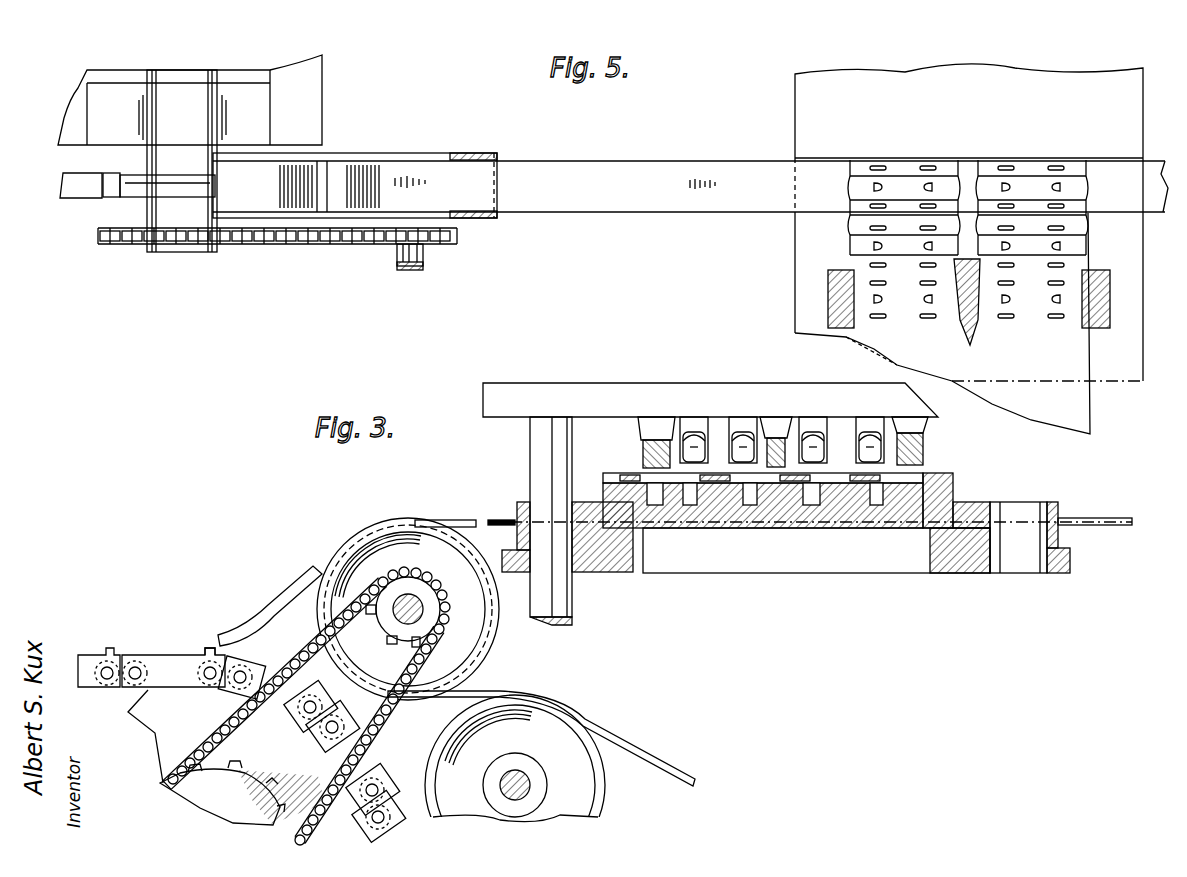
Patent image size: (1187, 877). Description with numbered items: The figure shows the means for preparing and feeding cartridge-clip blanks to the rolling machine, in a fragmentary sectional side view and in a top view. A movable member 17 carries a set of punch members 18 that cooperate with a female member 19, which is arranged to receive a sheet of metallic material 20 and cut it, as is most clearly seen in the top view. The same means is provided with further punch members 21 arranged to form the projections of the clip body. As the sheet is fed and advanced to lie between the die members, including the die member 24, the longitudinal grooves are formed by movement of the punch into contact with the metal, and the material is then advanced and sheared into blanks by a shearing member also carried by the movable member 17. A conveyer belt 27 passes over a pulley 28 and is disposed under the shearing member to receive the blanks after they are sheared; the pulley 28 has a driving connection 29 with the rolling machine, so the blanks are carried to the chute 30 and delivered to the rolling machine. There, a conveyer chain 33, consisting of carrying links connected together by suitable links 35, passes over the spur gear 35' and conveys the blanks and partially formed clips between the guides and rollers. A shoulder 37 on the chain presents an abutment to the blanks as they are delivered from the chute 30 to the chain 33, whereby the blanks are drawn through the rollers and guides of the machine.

In FIG. 3, the movable member 17 is at (492, 383).
In FIG. 3, the punch members 18 is at (641, 438).
In FIG. 5, the female member 19 is at (826, 298).
In FIG. 3, the female member 19 is at (732, 528).
In FIG. 5, the sheet of metallic material 20 is at (1090, 418).
In FIG. 3, the punch members 21 is at (735, 430).
In FIG. 5, the die member 24 is at (803, 221).
In FIG. 5, the conveyer belt 27 is at (737, 162).
In FIG. 3, the conveyer belt 27 is at (473, 520).
In FIG. 5, the pulley 28 is at (497, 219).
In FIG. 3, the pulley 28 is at (488, 655).
In FIG. 5, the driving connection 29 is at (304, 232).
In FIG. 3, the driving connection 29 is at (163, 781).
In FIG. 3, the chute 30 is at (277, 607).
In FIG. 3, the conveyer chain 33 is at (157, 653).
In FIG. 3, the links 35 is at (102, 694).
In FIG. 3, the spur gear 35' is at (120, 708).
In FIG. 3, the shoulder 37 is at (217, 647).